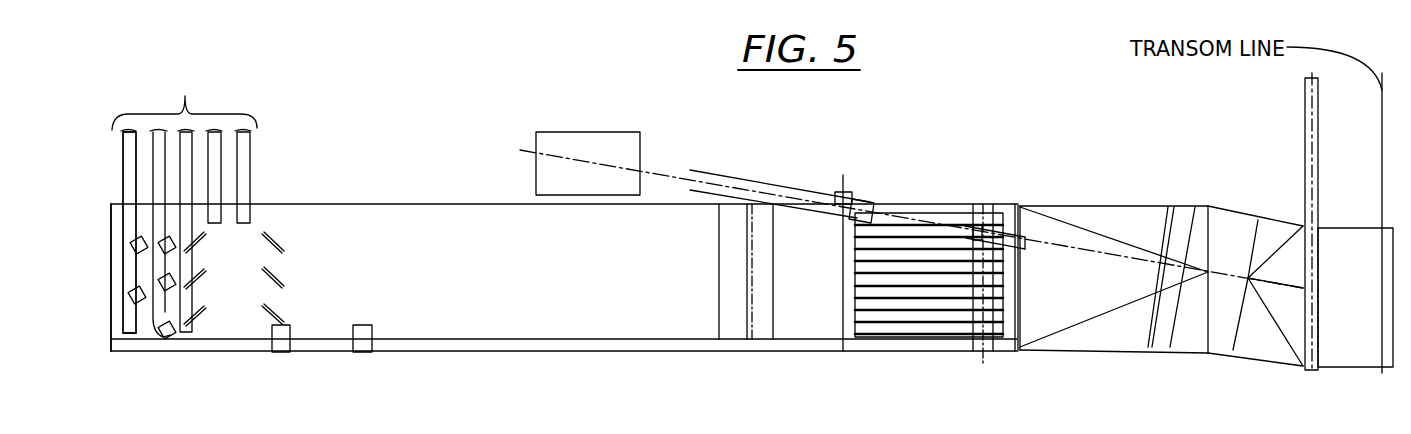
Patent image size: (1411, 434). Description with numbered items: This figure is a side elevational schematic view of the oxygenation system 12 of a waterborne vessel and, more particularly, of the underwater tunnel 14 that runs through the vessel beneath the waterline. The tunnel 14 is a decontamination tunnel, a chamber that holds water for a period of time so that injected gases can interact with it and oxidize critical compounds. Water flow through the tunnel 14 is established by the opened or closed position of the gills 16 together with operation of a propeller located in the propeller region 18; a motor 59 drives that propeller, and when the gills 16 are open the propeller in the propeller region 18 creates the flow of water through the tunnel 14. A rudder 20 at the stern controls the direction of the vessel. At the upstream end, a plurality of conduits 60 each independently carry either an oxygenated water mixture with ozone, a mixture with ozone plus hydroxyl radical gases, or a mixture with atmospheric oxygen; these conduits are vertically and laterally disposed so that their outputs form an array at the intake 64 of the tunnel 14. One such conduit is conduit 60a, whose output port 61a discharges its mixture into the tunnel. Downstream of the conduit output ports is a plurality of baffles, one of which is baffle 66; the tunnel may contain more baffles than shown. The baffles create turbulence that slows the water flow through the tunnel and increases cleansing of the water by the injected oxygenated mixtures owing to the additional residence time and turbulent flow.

The oxygenation system 12 is at (313, 354).
The tunnel 14 is at (555, 273).
The gills 16 is at (925, 340).
The propeller region 18 is at (1222, 355).
The rudder 20 is at (1345, 368).
The motor 59 is at (562, 132).
The conduits 60 is at (184, 202).
The conduit 60a is at (123, 168).
The output port 61a is at (130, 333).
The intake 64 is at (110, 318).
The baffle 66 is at (281, 243).